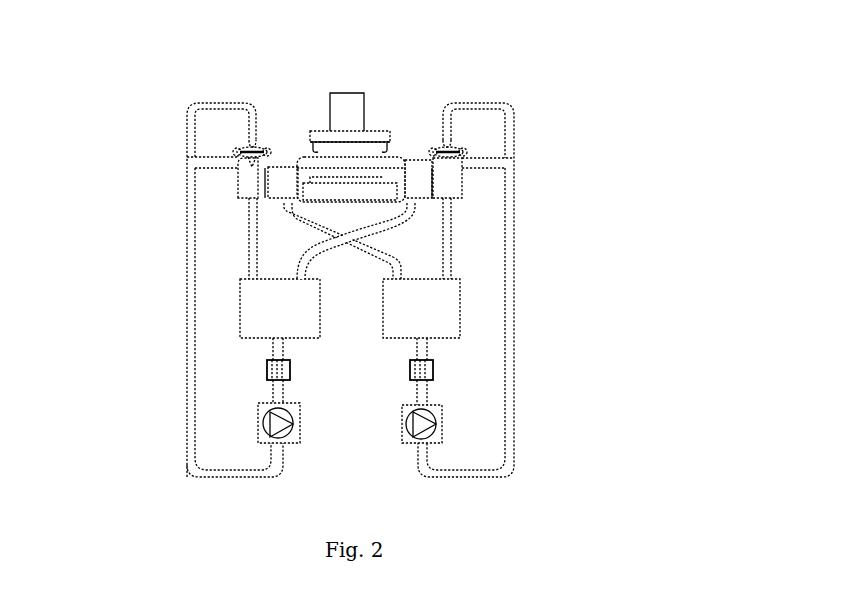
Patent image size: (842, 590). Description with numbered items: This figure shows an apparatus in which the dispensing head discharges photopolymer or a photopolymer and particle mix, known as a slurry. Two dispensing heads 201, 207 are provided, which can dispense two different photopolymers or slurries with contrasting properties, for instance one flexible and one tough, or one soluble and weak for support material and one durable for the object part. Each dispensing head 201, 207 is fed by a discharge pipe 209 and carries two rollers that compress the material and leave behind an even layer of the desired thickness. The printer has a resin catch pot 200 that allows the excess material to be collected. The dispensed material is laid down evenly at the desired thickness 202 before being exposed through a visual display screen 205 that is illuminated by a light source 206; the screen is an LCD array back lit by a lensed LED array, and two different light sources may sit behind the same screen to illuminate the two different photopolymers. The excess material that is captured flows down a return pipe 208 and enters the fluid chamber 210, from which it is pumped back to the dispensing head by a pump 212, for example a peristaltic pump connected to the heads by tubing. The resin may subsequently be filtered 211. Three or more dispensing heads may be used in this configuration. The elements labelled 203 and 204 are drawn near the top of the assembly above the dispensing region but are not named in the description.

The resin catch pot 200 is at (253, 188).
The dispensing head 201 is at (250, 151).
The dispensed material layer 202 is at (338, 162).
The drive unit 203 is at (377, 133).
The flange 204 is at (388, 143).
The visual display screen 205 is at (382, 180).
The light source 206 is at (390, 190).
The dispensing head 207 is at (443, 153).
The return pipe 208 is at (418, 213).
The discharge pipe 209 is at (514, 253).
The fluid chamber 210 is at (452, 315).
The filter 211 is at (432, 368).
The pump 212 is at (433, 437).